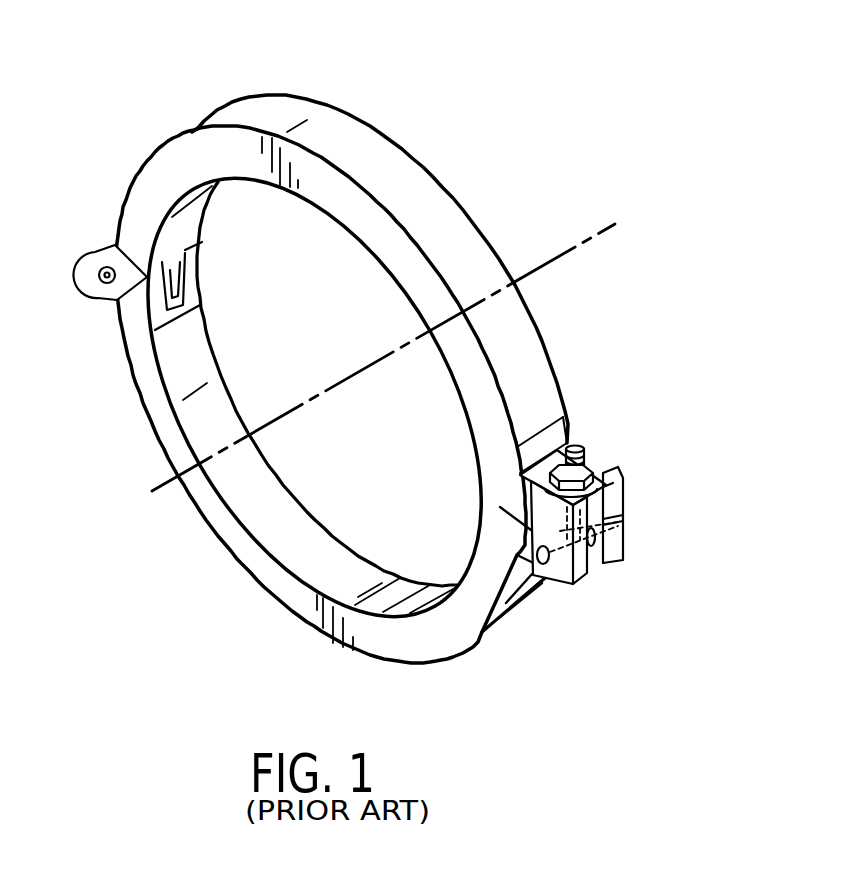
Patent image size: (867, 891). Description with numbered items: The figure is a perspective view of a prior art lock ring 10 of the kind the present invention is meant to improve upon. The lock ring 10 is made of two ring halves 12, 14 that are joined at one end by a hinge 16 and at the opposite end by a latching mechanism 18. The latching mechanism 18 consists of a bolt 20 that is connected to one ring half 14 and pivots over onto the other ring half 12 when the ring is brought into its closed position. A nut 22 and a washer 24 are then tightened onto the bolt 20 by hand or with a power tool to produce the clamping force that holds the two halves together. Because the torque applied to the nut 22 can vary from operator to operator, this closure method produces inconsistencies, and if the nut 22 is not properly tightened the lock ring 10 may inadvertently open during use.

The lock ring 10 is at (427, 155).
The ring half 12 is at (355, 128).
The ring half 14 is at (235, 548).
The hinge 16 is at (105, 277).
The latching mechanism 18 is at (612, 463).
The bolt 20 is at (574, 446).
The nut 22 is at (593, 462).
The washer 24 is at (615, 477).